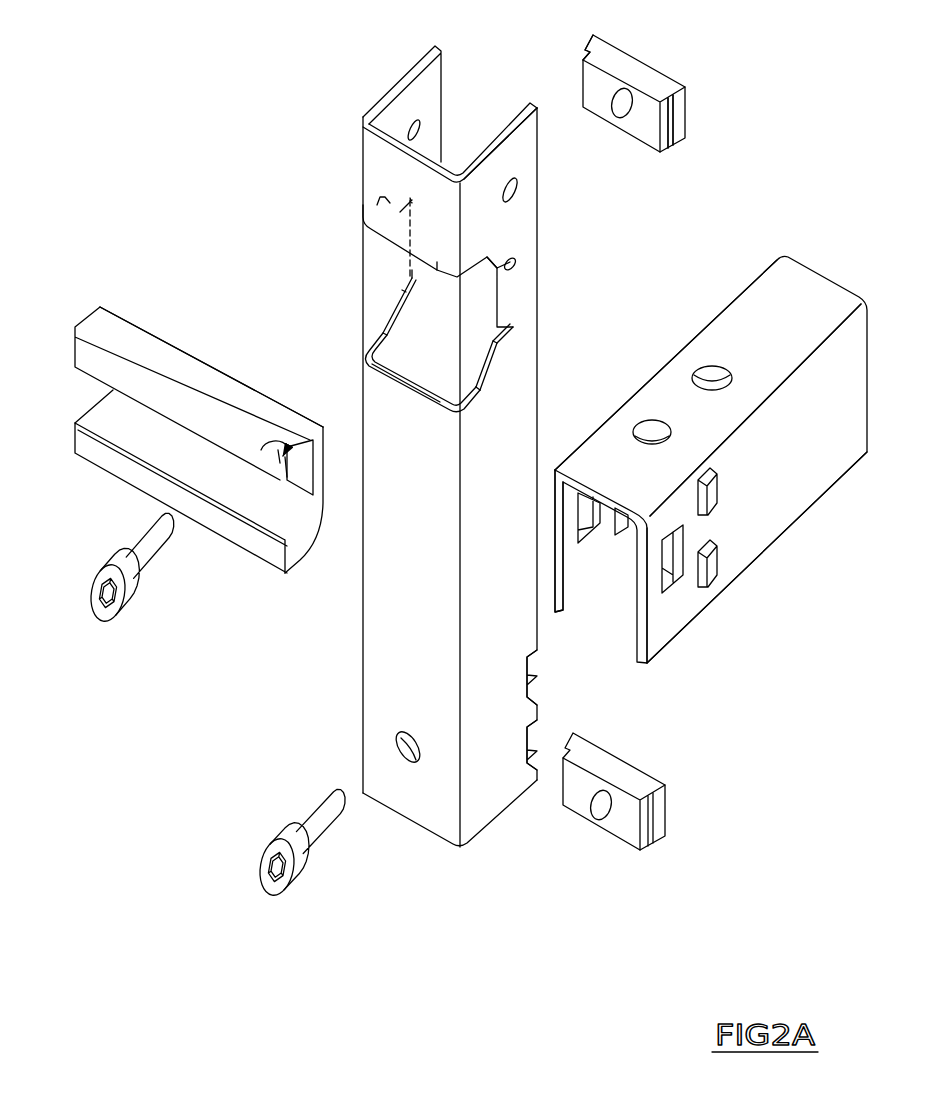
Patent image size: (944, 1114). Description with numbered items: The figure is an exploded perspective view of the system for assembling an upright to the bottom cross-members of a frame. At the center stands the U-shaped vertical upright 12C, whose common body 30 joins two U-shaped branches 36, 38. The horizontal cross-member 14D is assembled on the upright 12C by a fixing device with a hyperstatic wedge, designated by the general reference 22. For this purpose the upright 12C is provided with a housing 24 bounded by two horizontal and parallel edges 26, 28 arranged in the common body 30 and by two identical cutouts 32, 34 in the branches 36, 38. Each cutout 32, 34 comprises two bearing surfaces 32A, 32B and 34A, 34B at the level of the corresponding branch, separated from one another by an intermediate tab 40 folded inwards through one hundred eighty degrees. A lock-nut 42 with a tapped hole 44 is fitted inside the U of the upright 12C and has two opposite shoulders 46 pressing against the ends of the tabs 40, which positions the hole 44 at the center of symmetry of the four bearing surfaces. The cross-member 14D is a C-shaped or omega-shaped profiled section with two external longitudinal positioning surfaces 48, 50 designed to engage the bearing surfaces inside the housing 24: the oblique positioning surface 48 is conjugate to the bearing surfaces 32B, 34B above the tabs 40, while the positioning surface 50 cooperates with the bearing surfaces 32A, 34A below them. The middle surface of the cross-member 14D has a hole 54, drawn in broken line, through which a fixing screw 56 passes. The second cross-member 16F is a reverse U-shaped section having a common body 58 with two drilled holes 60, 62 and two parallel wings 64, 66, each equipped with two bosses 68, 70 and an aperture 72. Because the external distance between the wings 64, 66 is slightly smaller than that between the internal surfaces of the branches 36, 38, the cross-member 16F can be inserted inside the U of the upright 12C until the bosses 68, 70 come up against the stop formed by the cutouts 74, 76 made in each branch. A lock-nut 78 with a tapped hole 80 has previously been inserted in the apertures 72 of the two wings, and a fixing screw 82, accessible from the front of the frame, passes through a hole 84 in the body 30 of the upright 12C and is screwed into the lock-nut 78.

The vertical upright 12C is at (400, 680).
The common body 30 is at (388, 636).
The U-shaped branch 36 is at (408, 98).
The U-shaped branch 38 is at (518, 147).
The hole 84 is at (420, 747).
The cutout 74 is at (530, 676).
The cutout 76 is at (530, 740).
The fixing device with hyperstatic wedge 22 is at (367, 317).
The horizontal edge 28 is at (387, 235).
The bearing surface 32B is at (368, 210).
The cutout 32 is at (380, 326).
The bearing surface 32A is at (392, 312).
The housing 24 is at (420, 377).
The horizontal edge 26 is at (398, 378).
The cutout 34 is at (512, 337).
The bearing surface 34A is at (490, 370).
The bearing surface 34B is at (505, 293).
The intermediate tab 40 is at (498, 305).
The horizontal cross-member 14D is at (187, 374).
The oblique positioning surface 48 is at (323, 430).
The positioning surface 50 is at (323, 517).
The hole 54 is at (260, 457).
The fixing screw 56 is at (155, 558).
The fixing screw 82 is at (320, 827).
The lock-nut 42 is at (705, 67).
The tapped hole 44 is at (617, 103).
The shoulder 46 is at (586, 52).
The cross-member 16F is at (770, 510).
The common body 58 is at (747, 308).
The hole 60 is at (670, 432).
The hole 62 is at (730, 378).
The wing 64 is at (575, 582).
The wing 66 is at (688, 608).
The boss 68 is at (708, 493).
The boss 70 is at (710, 568).
The aperture 72 is at (583, 523).
The lock-nut 78 is at (623, 770).
The tapped hole 80 is at (608, 820).